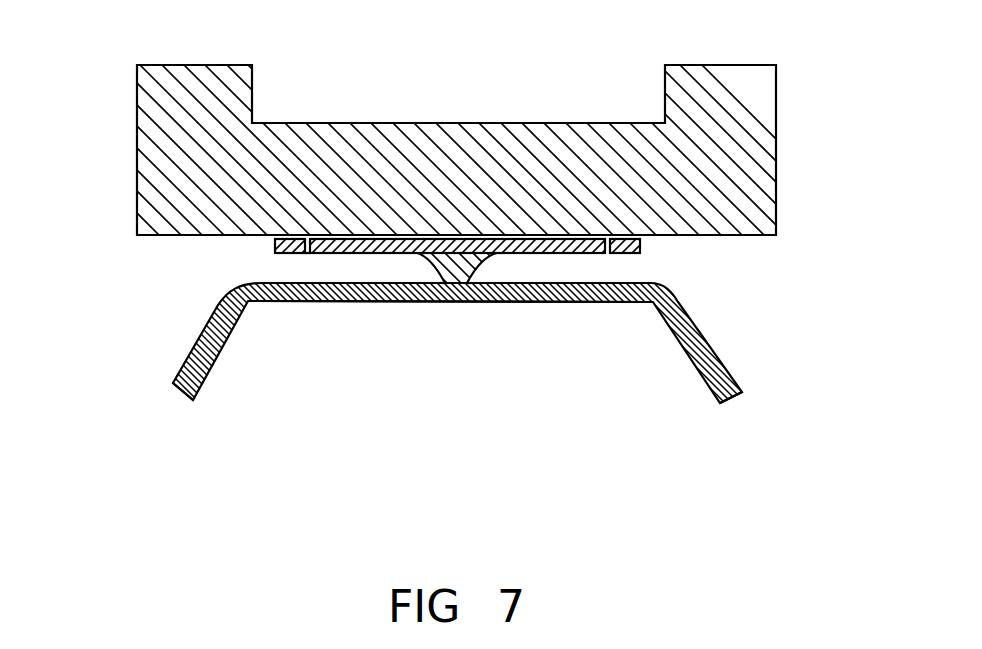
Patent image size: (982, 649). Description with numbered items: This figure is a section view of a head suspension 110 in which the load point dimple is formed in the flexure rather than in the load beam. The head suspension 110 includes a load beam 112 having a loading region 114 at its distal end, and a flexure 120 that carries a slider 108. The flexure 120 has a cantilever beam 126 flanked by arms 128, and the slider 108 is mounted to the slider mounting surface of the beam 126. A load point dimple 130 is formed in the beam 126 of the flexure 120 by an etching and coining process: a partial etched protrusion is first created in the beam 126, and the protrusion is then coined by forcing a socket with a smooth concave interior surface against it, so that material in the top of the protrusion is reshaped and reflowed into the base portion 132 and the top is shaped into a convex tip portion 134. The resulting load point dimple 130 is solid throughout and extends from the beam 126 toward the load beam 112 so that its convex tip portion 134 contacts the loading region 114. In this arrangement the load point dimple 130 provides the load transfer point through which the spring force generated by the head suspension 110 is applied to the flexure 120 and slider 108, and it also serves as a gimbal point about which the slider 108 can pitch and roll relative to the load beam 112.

The slider 108 is at (753, 90).
The head suspension 110 is at (780, 364).
The load beam 112 is at (288, 292).
The loading region 114 is at (483, 303).
The flexure 120 is at (326, 249).
The beam 126 is at (590, 255).
The arms 128 is at (276, 246).
The load point dimple 130 is at (460, 278).
The base portion 132 is at (478, 262).
The convex tip portion 134 is at (440, 268).